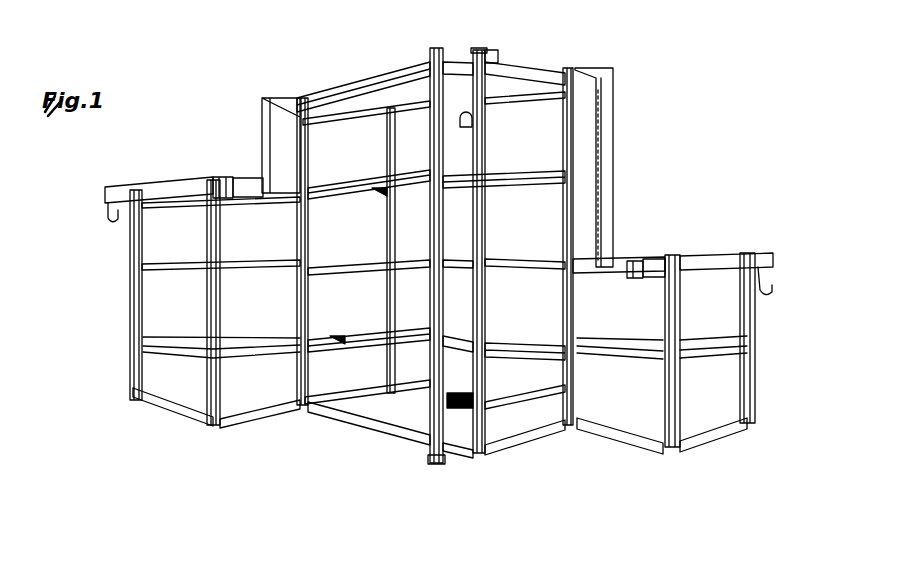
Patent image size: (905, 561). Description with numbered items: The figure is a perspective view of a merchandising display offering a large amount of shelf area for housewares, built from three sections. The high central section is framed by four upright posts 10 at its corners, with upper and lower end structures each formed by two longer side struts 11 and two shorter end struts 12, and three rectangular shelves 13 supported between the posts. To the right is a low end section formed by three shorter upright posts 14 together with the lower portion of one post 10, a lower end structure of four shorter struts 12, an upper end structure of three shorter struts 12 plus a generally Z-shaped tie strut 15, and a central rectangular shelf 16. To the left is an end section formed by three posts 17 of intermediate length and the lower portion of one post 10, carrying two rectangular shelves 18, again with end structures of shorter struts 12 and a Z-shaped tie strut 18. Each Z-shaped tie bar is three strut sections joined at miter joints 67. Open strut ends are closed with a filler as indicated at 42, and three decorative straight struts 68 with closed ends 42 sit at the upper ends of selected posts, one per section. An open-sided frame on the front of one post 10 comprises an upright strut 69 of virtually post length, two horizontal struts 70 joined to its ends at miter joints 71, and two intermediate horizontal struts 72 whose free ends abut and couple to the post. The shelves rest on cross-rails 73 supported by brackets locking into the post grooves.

The upright post 10 is at (310, 227).
The side beam or strut 11 is at (505, 97).
The end beam or strut 12 is at (563, 70).
The rectangular shelf 13 is at (377, 197).
The shorter upright post 14 is at (665, 305).
The Z-shaped tie strut 15 is at (613, 133).
The central rectangular shelf 16 is at (710, 337).
The post of intermediate length 17 is at (207, 320).
The rectangular shelf 18 is at (262, 133).
The closed end 42 is at (500, 47).
The miter joint 67 is at (610, 72).
The straight strut with closed ends 68 is at (493, 50).
The upright strut 69 is at (433, 285).
The horizontal strut 70 is at (445, 52).
The miter joint 71 is at (440, 462).
The intermediate horizontal strut 72 is at (463, 113).
The cross-rail 73 is at (512, 173).